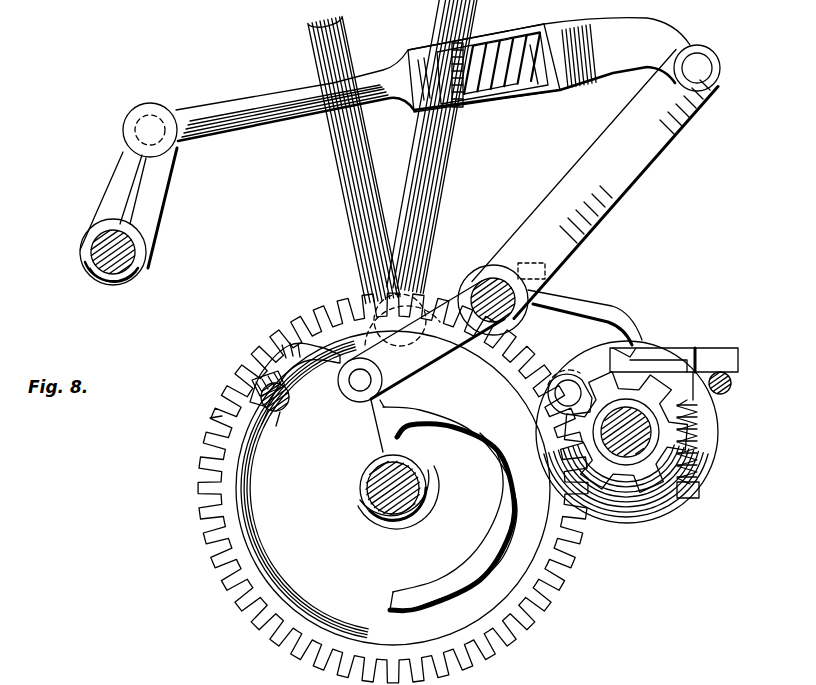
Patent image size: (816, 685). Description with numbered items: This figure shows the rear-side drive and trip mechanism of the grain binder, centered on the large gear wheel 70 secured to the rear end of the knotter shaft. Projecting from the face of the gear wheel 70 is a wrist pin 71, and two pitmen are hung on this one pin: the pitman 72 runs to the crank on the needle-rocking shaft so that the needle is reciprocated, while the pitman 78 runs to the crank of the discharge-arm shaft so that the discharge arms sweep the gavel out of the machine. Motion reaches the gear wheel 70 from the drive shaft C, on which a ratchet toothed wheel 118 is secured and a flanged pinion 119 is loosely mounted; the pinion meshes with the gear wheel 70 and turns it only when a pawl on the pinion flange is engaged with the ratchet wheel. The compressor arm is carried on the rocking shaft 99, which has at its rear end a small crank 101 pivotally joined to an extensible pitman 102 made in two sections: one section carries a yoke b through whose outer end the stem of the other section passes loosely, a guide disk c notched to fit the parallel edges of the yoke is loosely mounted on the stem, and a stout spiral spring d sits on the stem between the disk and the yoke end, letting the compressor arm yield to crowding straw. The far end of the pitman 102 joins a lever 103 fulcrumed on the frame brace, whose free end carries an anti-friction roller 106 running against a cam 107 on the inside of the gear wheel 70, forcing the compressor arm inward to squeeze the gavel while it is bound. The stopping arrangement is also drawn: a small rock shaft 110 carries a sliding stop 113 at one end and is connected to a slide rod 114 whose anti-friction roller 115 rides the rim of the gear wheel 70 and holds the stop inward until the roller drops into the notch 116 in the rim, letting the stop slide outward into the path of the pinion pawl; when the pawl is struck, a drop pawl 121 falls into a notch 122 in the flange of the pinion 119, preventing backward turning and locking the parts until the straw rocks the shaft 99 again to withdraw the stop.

The gear wheel 70 is at (393, 488).
The rock shaft 110 is at (412, 492).
The anti-friction roller 106 is at (357, 394).
The cam 107 is at (328, 362).
The slide rod 114 is at (283, 397).
The anti-friction roller 115 is at (276, 418).
The notch 116 is at (210, 418).
The wrist pin 71 is at (425, 300).
The lever 103 is at (594, 216).
The pitman 102 is at (269, 124).
The yoke b is at (502, 52).
The guide disk c is at (466, 102).
The spiral spring d is at (536, 70).
The pitman 78 is at (342, 183).
The pitman 72 is at (450, 190).
The crank 101 is at (155, 203).
The rocking shaft 99 is at (143, 272).
The drop pawl 121 is at (587, 317).
The notch 122 is at (638, 350).
The sliding stop 113 is at (732, 384).
The ratchet toothed wheel 118 is at (648, 502).
The drive shaft C is at (598, 432).
The flanged pinion 119 is at (706, 455).